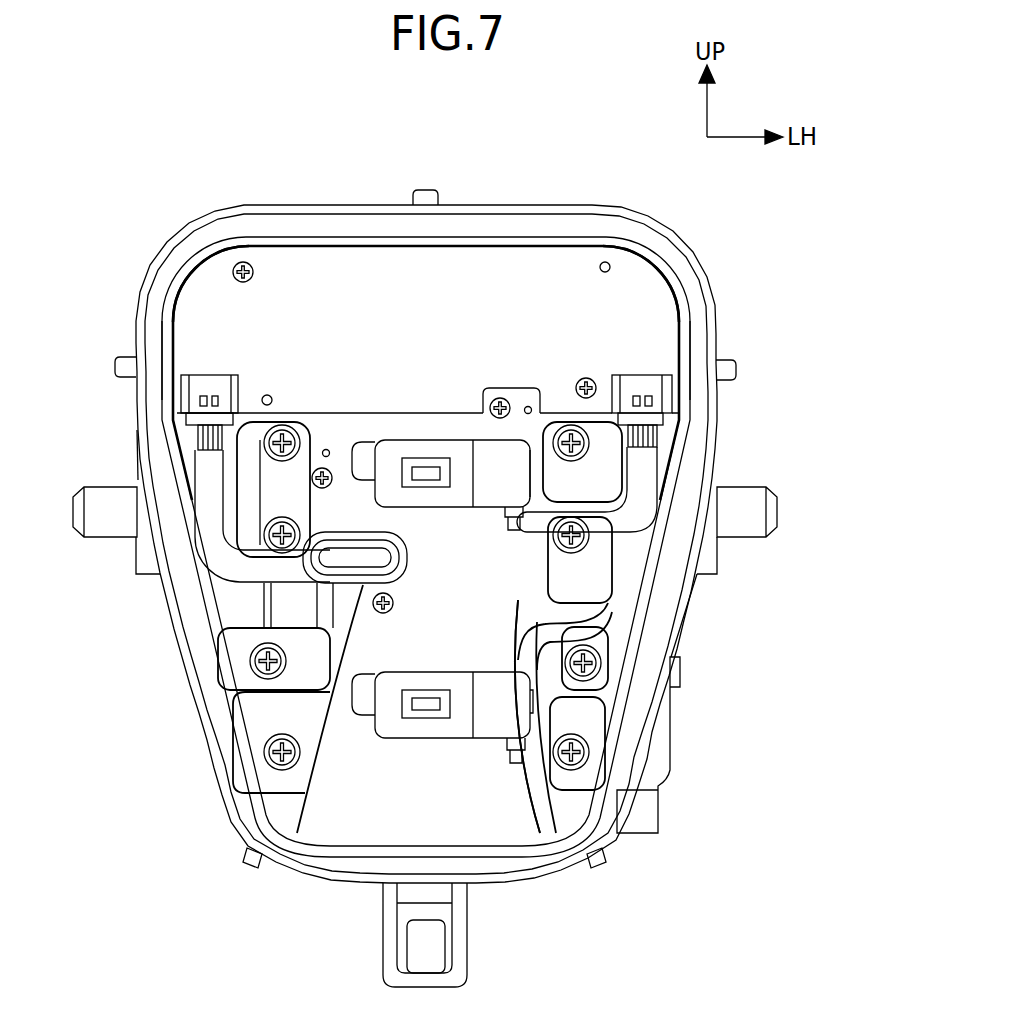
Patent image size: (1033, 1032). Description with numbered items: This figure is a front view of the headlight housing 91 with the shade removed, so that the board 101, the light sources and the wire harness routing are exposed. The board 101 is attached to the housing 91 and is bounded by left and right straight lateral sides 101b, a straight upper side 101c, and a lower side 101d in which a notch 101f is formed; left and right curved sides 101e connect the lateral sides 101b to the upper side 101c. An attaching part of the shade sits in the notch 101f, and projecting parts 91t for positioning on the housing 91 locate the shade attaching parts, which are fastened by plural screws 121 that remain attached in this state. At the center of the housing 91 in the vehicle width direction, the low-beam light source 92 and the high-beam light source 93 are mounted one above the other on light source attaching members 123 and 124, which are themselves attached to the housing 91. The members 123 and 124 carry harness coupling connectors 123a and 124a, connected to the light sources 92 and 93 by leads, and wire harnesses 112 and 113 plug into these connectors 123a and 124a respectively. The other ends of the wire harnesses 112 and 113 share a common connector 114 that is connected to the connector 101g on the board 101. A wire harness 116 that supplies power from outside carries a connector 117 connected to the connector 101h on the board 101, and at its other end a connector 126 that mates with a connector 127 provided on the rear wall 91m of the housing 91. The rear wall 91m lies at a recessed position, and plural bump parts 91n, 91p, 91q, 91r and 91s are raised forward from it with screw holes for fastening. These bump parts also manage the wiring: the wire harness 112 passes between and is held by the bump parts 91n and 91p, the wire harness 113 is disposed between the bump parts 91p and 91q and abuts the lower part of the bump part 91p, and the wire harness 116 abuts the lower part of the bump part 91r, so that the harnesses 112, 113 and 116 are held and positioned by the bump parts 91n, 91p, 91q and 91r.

The housing 91 is at (204, 212).
The rear wall 91m is at (540, 687).
The bump part 91n is at (610, 438).
The bump part 91p is at (602, 540).
The bump part 91q is at (613, 678).
The bump part 91r is at (262, 510).
The bump part 91s is at (255, 745).
The projecting part for positioning 91t is at (327, 448).
The low-beam light source 92 is at (425, 457).
The high-beam light source 93 is at (487, 718).
The board 101 is at (288, 285).
The lateral side 101b is at (170, 347).
The upper side 101c is at (400, 246).
The lower side 101d is at (137, 466).
The curved side 101e is at (192, 281).
The notch 101f is at (497, 387).
The connector 101g is at (640, 383).
The connector 101h is at (200, 391).
The wire harness 112 is at (635, 470).
The wire harness 113 is at (627, 565).
The connector 114 is at (662, 420).
The wire harness 116 is at (227, 558).
The connector 117 is at (193, 418).
The screw 121 is at (510, 398).
The light source attaching member 123 is at (390, 455).
The harness coupling connector 123a is at (519, 455).
The light source attaching member 124 is at (398, 724).
The harness coupling connector 124a is at (432, 708).
The connector 126 is at (347, 573).
The connector 127 is at (340, 582).